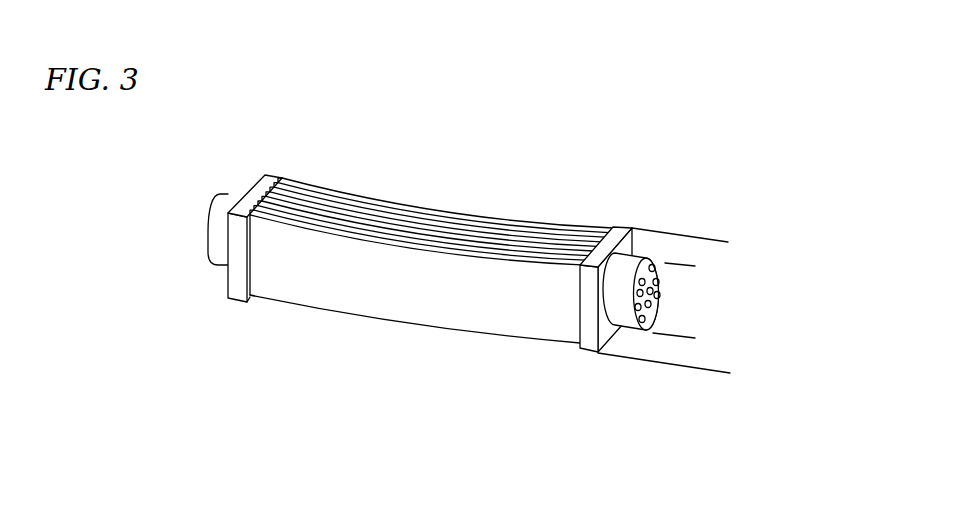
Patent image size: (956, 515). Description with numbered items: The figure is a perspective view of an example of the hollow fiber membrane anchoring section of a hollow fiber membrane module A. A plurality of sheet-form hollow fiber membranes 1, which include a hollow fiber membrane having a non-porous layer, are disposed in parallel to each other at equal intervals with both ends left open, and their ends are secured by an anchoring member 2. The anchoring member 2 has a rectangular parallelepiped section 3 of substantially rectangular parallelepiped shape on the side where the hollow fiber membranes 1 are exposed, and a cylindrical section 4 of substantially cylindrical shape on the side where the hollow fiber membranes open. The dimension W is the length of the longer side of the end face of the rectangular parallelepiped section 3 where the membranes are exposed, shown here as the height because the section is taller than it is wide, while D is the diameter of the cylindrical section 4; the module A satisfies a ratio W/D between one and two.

The sheet-form hollow fiber membrane 1 is at (398, 298).
The anchoring member 2 is at (610, 352).
The rectangular parallelepiped section 3 is at (590, 345).
The cylindrical section 4 is at (625, 322).
The hollow fiber membrane module A is at (178, 158).
The length of the longer side of the end face W is at (722, 253).
The diameter of the cylindrical section D is at (680, 275).